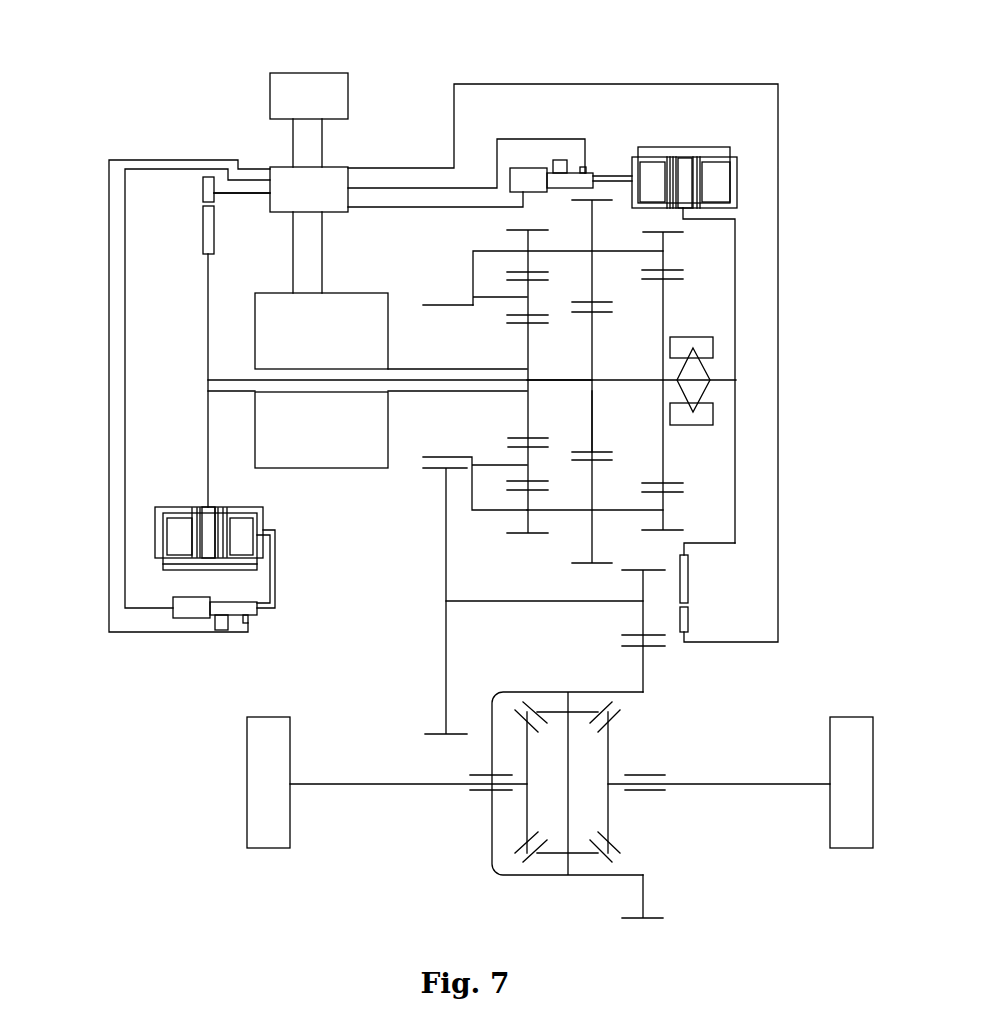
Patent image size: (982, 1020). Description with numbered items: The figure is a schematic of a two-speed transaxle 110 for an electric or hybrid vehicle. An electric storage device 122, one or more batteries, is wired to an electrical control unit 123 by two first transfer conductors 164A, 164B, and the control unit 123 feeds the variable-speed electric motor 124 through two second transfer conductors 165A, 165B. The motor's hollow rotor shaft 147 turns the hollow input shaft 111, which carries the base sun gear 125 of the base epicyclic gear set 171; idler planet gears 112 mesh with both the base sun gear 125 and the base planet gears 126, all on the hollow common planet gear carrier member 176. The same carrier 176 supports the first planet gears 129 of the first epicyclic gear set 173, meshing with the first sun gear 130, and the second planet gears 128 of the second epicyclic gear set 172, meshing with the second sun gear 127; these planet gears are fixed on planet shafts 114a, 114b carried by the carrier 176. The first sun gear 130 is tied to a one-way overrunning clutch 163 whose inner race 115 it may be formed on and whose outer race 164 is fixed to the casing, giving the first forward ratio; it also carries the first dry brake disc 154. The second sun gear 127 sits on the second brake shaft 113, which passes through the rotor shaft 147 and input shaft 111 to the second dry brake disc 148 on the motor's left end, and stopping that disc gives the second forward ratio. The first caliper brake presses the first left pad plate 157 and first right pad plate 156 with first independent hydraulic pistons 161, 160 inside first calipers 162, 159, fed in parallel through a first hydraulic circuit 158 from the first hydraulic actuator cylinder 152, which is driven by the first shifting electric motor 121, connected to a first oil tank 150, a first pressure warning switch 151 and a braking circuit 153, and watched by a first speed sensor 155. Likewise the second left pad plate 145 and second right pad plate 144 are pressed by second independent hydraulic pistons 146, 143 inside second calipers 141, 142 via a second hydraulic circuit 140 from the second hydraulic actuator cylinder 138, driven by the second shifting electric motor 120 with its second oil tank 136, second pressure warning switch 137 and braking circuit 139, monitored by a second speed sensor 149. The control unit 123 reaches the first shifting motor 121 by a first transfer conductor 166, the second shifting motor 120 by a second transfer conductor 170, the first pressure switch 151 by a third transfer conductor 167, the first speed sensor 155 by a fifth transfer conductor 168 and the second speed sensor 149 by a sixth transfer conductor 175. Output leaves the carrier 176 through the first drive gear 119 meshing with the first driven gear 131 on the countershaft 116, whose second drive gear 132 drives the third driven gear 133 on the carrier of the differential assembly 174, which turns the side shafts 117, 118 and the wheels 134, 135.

The two-speed transaxle 110 is at (428, 58).
The input shaft 111 is at (452, 369).
The idler planet gears 112 is at (530, 302).
The second brake shaft 113 is at (548, 380).
The planet shafts 114a is at (633, 510).
The gear shaft 114b is at (500, 463).
The inner race 115 is at (733, 380).
The countershaft 116 is at (503, 601).
The side shaft 117 is at (377, 783).
The side shaft 118 is at (770, 783).
The first drive gear 119 is at (423, 305).
The second shifting electric motor 120 is at (182, 616).
The first shifting electric motor 121 is at (518, 189).
The electric storage device 122 is at (293, 103).
The electrical control unit 123 is at (293, 198).
The electric motor 124 is at (310, 341).
The base sun gear 125 is at (527, 360).
The base planet gears 126 is at (525, 503).
The second sun gear 127 is at (592, 365).
The second planet gears 128 is at (592, 503).
The first planet gears 129 is at (663, 503).
The first sun gear 130 is at (662, 434).
The first driven gear 131 is at (445, 570).
The second drive gear 132 is at (643, 614).
The third driven gear 133 is at (643, 888).
The wheel 134 is at (257, 793).
The wheel 135 is at (840, 793).
The second oil tank 136 is at (222, 631).
The second pressure warning switch 137 is at (250, 622).
The second hydraulic actuator cylinder 138 is at (223, 602).
The braking circuit 139 is at (275, 581).
The second hydraulic circuit 140 is at (213, 571).
The second caliper 141 is at (157, 522).
The second caliper 142 is at (265, 523).
The second independent hydraulic pistons 143 is at (250, 513).
The second right pad plate 144 is at (224, 508).
The second left pad plate 145 is at (198, 508).
The second independent hydraulic pistons 146 is at (170, 511).
The rotor shaft 147 is at (328, 393).
The second dry brake disc 148 is at (203, 249).
The second speed sensor 149 is at (203, 196).
The first oil tank 150 is at (553, 166).
The first pressure warning switch 151 is at (586, 170).
The first hydraulic actuator cylinder 152 is at (565, 189).
The braking circuit 153 is at (620, 182).
The first dry brake disc 154 is at (680, 570).
The first speed sensor 155 is at (680, 614).
The first right pad plate 156 is at (696, 165).
The first left pad plate 157 is at (673, 165).
The first hydraulic circuit 158 is at (730, 147).
The first caliper 159 is at (737, 209).
The first independent hydraulic pistons 160 is at (712, 160).
The first independent hydraulic pistons 161 is at (647, 160).
The first caliper 162 is at (641, 209).
The one-way overrunning clutch 163 is at (703, 397).
The outer race 164 is at (698, 425).
The first transfer conductor 164A is at (293, 145).
The first transfer conductor 164B is at (322, 146).
The second transfer conductor 165A is at (293, 278).
The second transfer conductor 165B is at (322, 278).
The first transfer conductor 166 is at (497, 209).
The third transfer conductor 167 is at (442, 193).
The fifth transfer conductor 168 is at (453, 112).
The second transfer conductor 170 is at (127, 367).
The base epicyclic gear set 171 is at (502, 446).
The second epicyclic gear set 172 is at (588, 434).
The first epicyclic gear set 173 is at (653, 337).
The differential assembly 174 is at (500, 687).
The sixth transfer conductor 175 is at (228, 194).
The common planet gear carrier member 176 is at (473, 286).